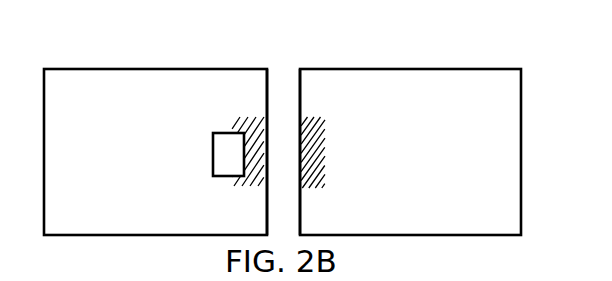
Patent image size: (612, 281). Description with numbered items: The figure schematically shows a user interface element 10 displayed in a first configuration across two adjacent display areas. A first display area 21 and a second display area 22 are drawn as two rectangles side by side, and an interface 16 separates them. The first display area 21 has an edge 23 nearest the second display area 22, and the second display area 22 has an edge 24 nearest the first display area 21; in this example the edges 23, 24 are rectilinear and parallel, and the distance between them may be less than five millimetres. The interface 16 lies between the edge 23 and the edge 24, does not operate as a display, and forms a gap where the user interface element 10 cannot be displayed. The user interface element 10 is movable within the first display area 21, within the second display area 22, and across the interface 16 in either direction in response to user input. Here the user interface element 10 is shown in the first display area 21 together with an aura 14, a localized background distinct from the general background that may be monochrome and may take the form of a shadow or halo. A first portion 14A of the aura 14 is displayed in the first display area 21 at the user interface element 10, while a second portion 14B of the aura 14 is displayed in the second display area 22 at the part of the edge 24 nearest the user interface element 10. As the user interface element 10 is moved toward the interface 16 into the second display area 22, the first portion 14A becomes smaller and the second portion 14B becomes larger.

The user interface element 10 is at (213, 152).
The aura 14 is at (269, 164).
The first portion of the aura 14A is at (258, 182).
The second portion of the aura 14B is at (318, 180).
The interface 16 is at (285, 57).
The first display area 21 is at (140, 68).
The second display area 22 is at (423, 68).
The edge 23 is at (263, 108).
The edge 24 is at (302, 108).